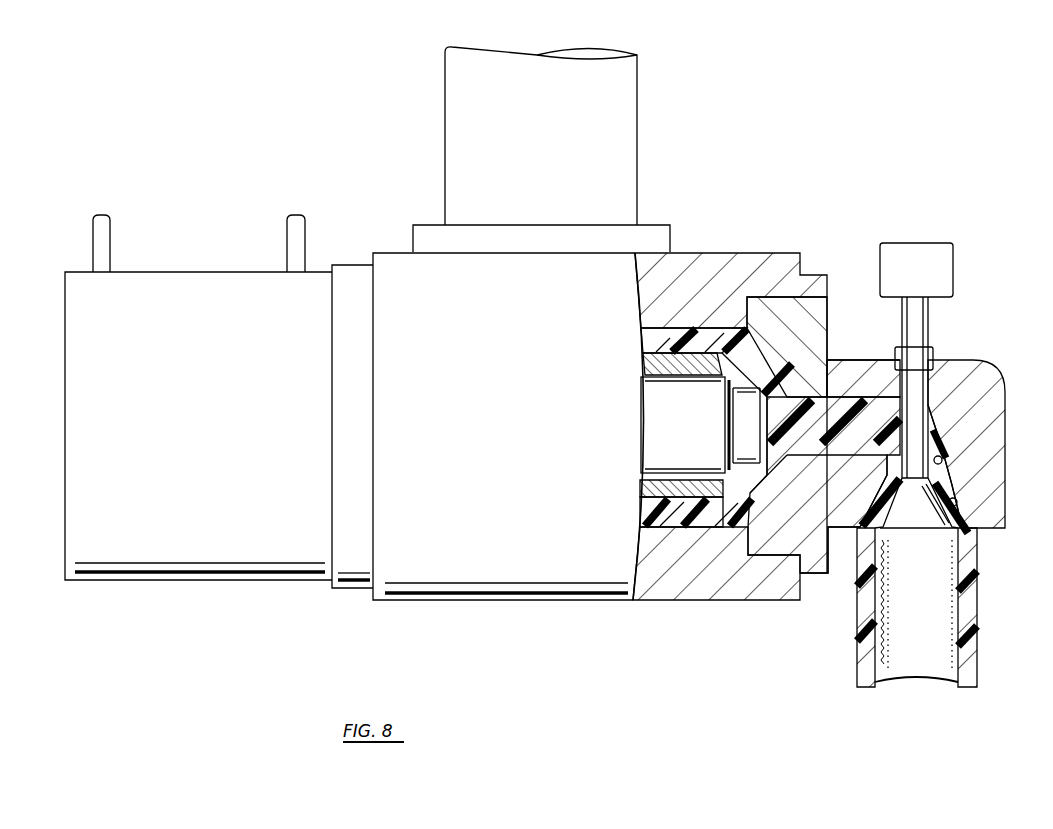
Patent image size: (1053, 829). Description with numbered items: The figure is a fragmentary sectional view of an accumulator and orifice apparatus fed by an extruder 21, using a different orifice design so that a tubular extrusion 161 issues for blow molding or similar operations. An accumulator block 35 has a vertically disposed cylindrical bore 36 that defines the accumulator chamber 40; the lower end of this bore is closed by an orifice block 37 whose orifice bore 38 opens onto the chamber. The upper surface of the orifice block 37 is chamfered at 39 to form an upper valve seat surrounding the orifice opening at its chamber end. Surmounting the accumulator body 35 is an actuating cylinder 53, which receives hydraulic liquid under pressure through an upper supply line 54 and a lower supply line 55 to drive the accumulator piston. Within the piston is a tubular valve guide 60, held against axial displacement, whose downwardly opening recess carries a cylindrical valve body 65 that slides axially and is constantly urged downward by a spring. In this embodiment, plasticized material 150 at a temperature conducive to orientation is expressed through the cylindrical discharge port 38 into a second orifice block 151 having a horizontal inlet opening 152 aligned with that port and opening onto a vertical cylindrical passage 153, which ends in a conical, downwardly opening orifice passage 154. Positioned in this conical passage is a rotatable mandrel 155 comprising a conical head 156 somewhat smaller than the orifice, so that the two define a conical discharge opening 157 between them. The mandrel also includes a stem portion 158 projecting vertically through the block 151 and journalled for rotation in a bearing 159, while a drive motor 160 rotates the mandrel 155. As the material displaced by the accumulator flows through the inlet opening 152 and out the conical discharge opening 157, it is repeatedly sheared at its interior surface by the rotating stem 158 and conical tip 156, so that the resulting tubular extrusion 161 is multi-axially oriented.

The extruder 21 is at (625, 103).
The accumulator block 35 is at (539, 572).
The cylindrical bore 36 is at (704, 523).
The orifice block 37 is at (818, 573).
The orifice bore 38 is at (789, 393).
The chamfer 39 is at (767, 485).
The accumulator chamber 40 is at (722, 510).
The actuating cylinder 53 is at (207, 290).
The upper supply line 54 is at (100, 236).
The lower supply line 55 is at (296, 236).
The tubular valve guide 60 is at (667, 487).
The cylindrical valve body 65 is at (693, 432).
The plasticized material 150 is at (845, 403).
The orifice block 151 is at (977, 372).
The horizontal inlet opening 152 is at (843, 443).
The vertical cylindrical passage 153 is at (942, 457).
The conical orifice passage 154 is at (957, 503).
The rotatable mandrel 155 is at (917, 410).
The conical head 156 is at (926, 517).
The conical discharge opening 157 is at (883, 518).
The stem portion 158 is at (940, 420).
The bearing 159 is at (933, 350).
The drive motor 160 is at (950, 252).
The tubular extrusion 161 is at (978, 637).